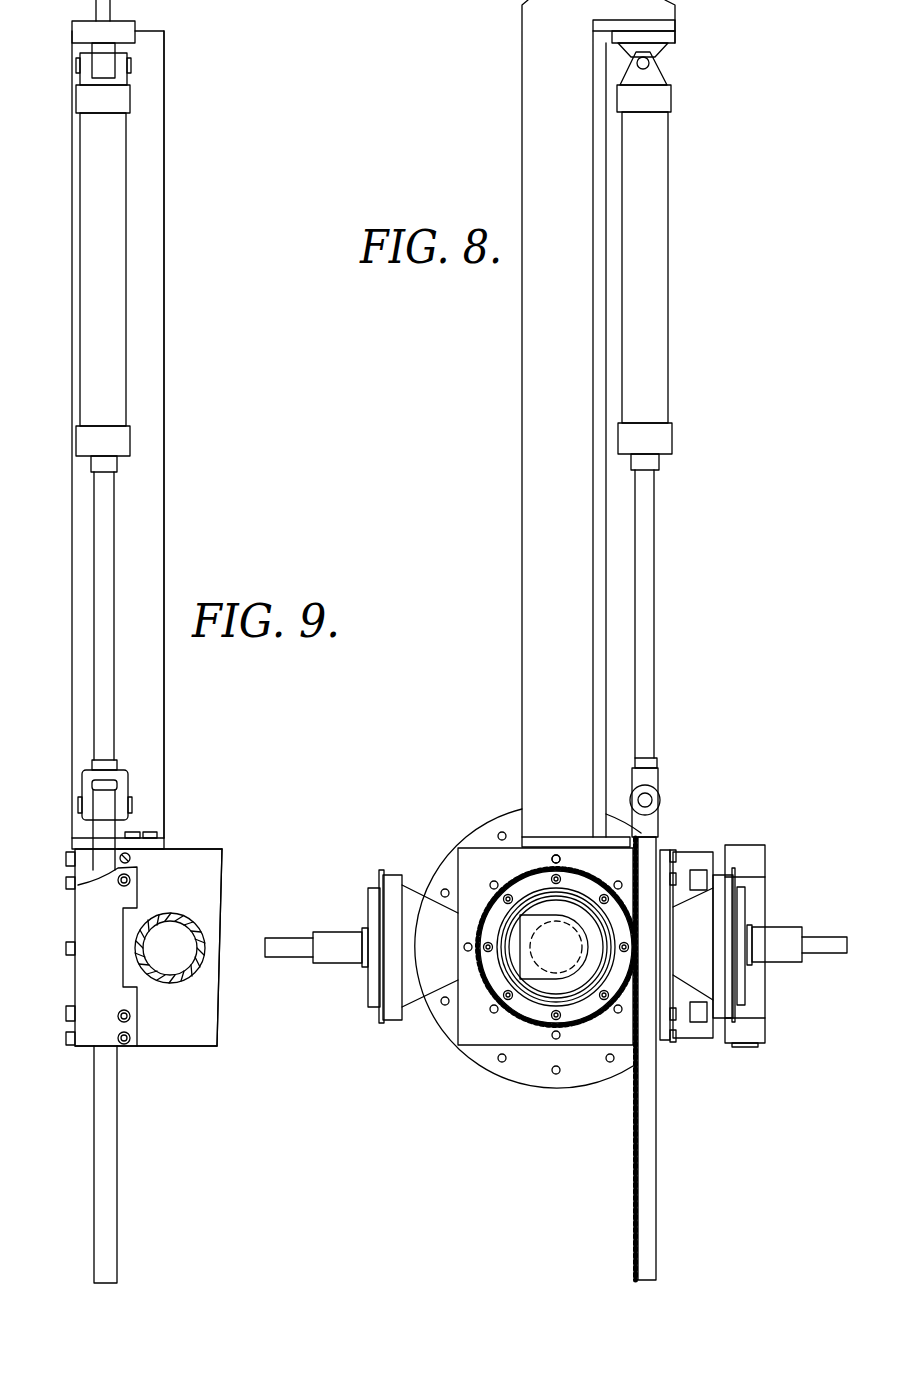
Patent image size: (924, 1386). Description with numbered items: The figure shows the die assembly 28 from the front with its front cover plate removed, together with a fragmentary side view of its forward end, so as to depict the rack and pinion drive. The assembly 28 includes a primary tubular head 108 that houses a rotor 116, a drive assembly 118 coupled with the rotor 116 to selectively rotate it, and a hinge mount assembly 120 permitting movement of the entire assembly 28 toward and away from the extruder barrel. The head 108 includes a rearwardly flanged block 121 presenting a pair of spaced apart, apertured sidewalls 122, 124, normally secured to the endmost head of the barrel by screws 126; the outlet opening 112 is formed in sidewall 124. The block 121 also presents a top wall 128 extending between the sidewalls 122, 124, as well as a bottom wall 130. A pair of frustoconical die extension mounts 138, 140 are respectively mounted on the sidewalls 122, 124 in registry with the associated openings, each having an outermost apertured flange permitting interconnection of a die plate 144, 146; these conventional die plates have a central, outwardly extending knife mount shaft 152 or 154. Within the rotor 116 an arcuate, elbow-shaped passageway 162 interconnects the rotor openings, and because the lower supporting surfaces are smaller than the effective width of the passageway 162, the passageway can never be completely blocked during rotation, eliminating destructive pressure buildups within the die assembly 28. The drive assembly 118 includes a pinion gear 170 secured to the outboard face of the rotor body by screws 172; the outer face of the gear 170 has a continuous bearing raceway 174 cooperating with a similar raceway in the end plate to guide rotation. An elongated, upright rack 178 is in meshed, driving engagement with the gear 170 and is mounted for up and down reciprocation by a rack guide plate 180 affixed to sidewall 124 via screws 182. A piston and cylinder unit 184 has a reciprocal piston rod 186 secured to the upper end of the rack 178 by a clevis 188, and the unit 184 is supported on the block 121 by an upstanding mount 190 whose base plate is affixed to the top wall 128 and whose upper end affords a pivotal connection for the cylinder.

In FIG. 8, the die assembly 28 is at (348, 864).
In FIG. 9, the primary tubular head 108 is at (189, 828).
In FIG. 8, the primary tubular head 108 is at (477, 828).
In FIG. 9, the outlet opening 112 is at (178, 955).
In FIG. 8, the rotor 116 is at (494, 892).
In FIG. 9, the drive assembly 118 is at (192, 84).
In FIG. 8, the drive assembly 118 is at (497, 141).
In FIG. 8, the hinge mount assembly 120 is at (778, 847).
In FIG. 9, the rearwardly flanged block 121 is at (213, 1020).
In FIG. 8, the rearwardly flanged block 121 is at (500, 855).
In FIG. 8, the sidewall 122 is at (428, 1000).
In FIG. 9, the sidewall 124 is at (207, 876).
In FIG. 8, the screws 126 is at (557, 1064).
In FIG. 9, the top wall 128 is at (212, 848).
In FIG. 9, the bottom wall 130 is at (203, 1048).
In FIG. 8, the bottom wall 130 is at (478, 1058).
In FIG. 8, the frustoconical die extension mount 138 is at (412, 897).
In FIG. 8, the frustoconical die extension mount 140 is at (745, 992).
In FIG. 8, the die plate 144 is at (370, 980).
In FIG. 8, the die plate 146 is at (697, 967).
In FIG. 8, the knife mount shaft 152 is at (347, 937).
In FIG. 8, the knife mount shaft 154 is at (775, 935).
In FIG. 8, the arcuate elbow-shaped passageway 162 is at (522, 975).
In FIG. 8, the pinion gear 170 is at (527, 1012).
In FIG. 8, the screws 172 is at (557, 853).
In FIG. 8, the bearing raceway 174 is at (597, 1002).
In FIG. 9, the rack 178 is at (110, 1211).
In FIG. 8, the rack 178 is at (648, 1211).
In FIG. 9, the rack guide plate 180 is at (92, 985).
In FIG. 9, the screws 182 is at (132, 1044).
In FIG. 9, the piston and cylinder unit 184 is at (136, 181).
In FIG. 8, the piston and cylinder unit 184 is at (676, 197).
In FIG. 9, the piston rod 186 is at (100, 595).
In FIG. 8, the piston rod 186 is at (645, 582).
In FIG. 9, the clevis 188 is at (122, 768).
In FIG. 8, the clevis 188 is at (657, 772).
In FIG. 9, the upstanding mount 190 is at (152, 483).
In FIG. 8, the upstanding mount 190 is at (532, 435).